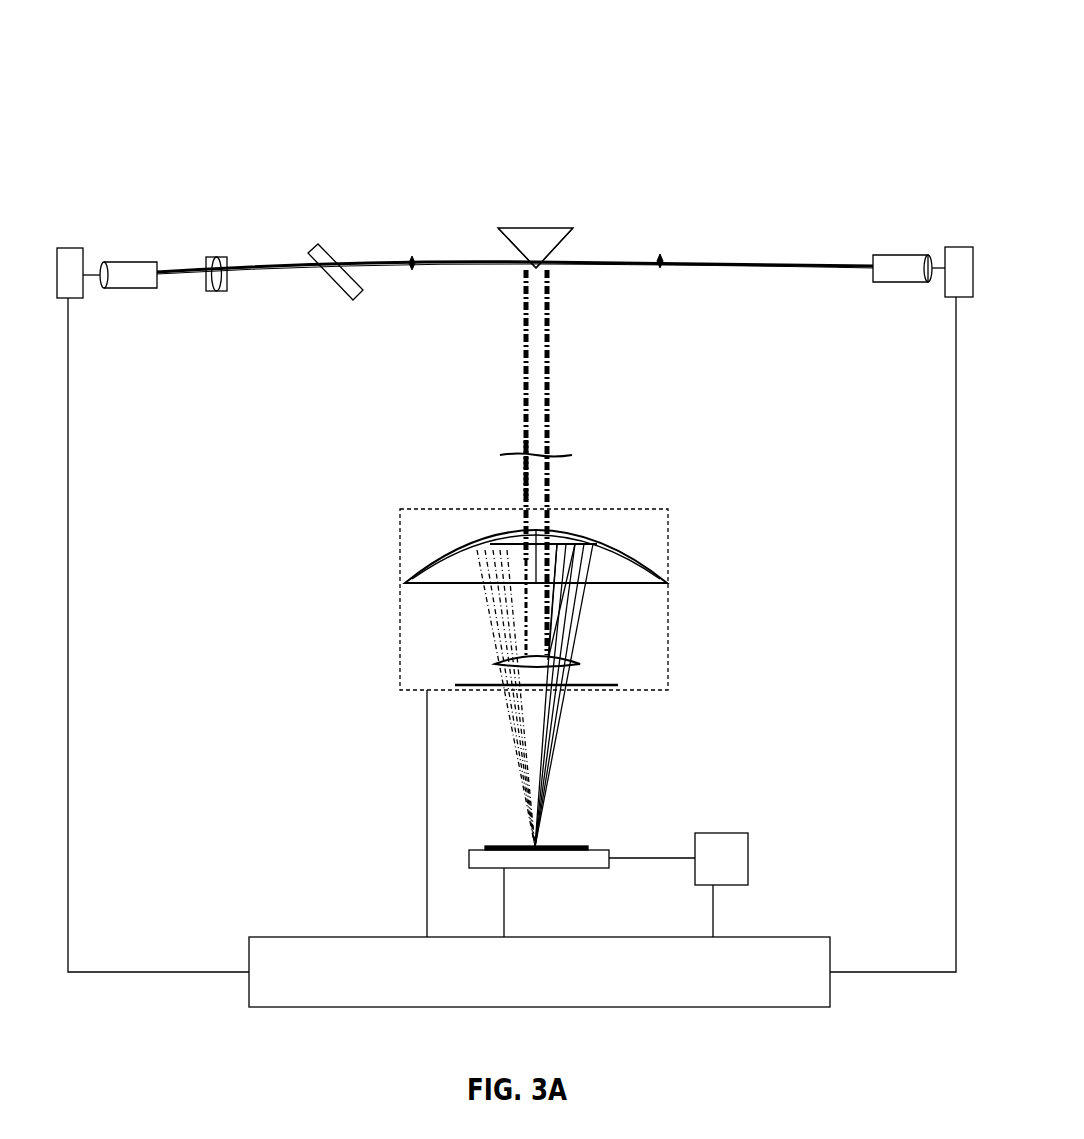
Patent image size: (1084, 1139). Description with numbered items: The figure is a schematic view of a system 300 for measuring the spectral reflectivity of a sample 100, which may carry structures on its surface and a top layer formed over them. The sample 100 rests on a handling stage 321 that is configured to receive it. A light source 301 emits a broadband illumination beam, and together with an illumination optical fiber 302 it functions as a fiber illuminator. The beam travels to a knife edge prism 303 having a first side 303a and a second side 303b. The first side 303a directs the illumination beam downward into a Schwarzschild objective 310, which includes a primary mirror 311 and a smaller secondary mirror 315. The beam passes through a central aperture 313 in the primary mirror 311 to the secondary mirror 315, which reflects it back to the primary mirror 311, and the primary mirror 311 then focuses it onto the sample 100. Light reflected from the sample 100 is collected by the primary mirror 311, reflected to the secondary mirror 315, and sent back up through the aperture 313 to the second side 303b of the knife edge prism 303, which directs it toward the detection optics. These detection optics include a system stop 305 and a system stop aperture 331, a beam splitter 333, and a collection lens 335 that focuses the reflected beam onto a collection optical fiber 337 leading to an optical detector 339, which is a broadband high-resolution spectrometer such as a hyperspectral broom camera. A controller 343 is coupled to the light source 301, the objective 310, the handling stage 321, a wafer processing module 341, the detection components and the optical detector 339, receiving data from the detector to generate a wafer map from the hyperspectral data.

The system 300 is at (212, 102).
The light source 301 is at (957, 247).
The illumination optical fiber 302 is at (900, 255).
The knife edge prism 303 is at (535, 228).
The first side of knife edge prism 303a is at (560, 242).
The second side of knife edge prism 303b is at (512, 242).
The system stop 305 is at (553, 470).
The Schwarzschild objective 310 is at (399, 598).
The primary mirror 311 is at (642, 565).
The aperture 313 is at (580, 533).
The secondary mirror 315 is at (545, 668).
The handling stage 321 is at (578, 868).
The system stop aperture 331 is at (520, 470).
The beam splitter 333 is at (315, 246).
The collection lens 335 is at (216, 257).
The collection optical fiber 337 is at (132, 262).
The optical detector 339 is at (72, 248).
The wafer processing module 341 is at (749, 860).
The controller 343 is at (372, 937).
The sample 100 is at (575, 846).